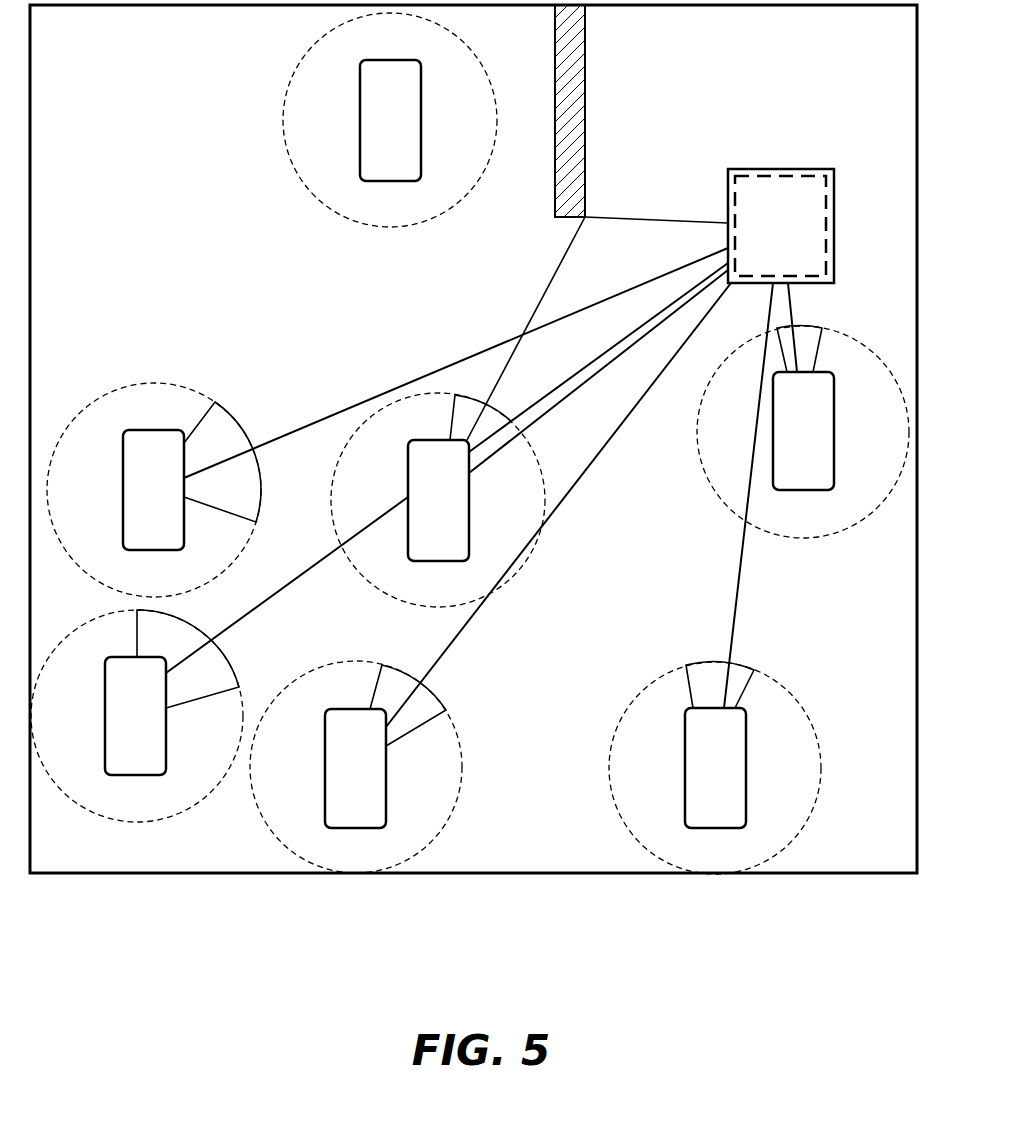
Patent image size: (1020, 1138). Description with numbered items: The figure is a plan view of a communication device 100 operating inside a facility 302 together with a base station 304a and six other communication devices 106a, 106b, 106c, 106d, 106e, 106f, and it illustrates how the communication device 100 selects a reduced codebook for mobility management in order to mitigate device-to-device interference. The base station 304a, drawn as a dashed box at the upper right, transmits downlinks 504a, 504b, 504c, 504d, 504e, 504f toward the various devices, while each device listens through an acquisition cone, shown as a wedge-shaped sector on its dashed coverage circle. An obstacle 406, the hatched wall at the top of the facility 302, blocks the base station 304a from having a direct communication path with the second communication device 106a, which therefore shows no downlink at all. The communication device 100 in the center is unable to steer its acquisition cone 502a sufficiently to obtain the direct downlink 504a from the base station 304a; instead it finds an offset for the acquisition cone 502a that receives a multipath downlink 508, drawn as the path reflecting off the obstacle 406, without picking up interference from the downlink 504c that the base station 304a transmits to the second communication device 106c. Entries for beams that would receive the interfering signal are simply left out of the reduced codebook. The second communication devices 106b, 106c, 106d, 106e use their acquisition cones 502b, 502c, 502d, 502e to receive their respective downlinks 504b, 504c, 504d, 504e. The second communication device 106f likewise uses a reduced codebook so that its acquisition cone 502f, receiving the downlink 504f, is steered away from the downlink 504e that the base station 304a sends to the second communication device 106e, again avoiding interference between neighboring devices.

The facility 302 is at (78, 132).
The obstacle 406 is at (588, 107).
The multipath downlink 508 is at (652, 218).
The base station 304a is at (758, 262).
The communication device 100 is at (456, 512).
The second communication device 106a is at (414, 132).
The second communication device 106b is at (177, 502).
The second communication device 106c is at (158, 729).
The second communication device 106d is at (332, 779).
The second communication device 106e is at (692, 781).
The second communication device 106f is at (782, 444).
The acquisition cone 502a is at (449, 430).
The acquisition cone 502b is at (208, 502).
The acquisition cone 502c is at (188, 649).
The acquisition cone 502d is at (428, 722).
The acquisition cone 502e is at (740, 700).
The acquisition cone 502f is at (818, 357).
The direct downlink 504a is at (552, 410).
The downlink 504b is at (340, 412).
The downlink 504c is at (325, 562).
The downlink 504d is at (578, 487).
The downlink 504e is at (740, 573).
The downlink 504f is at (792, 310).